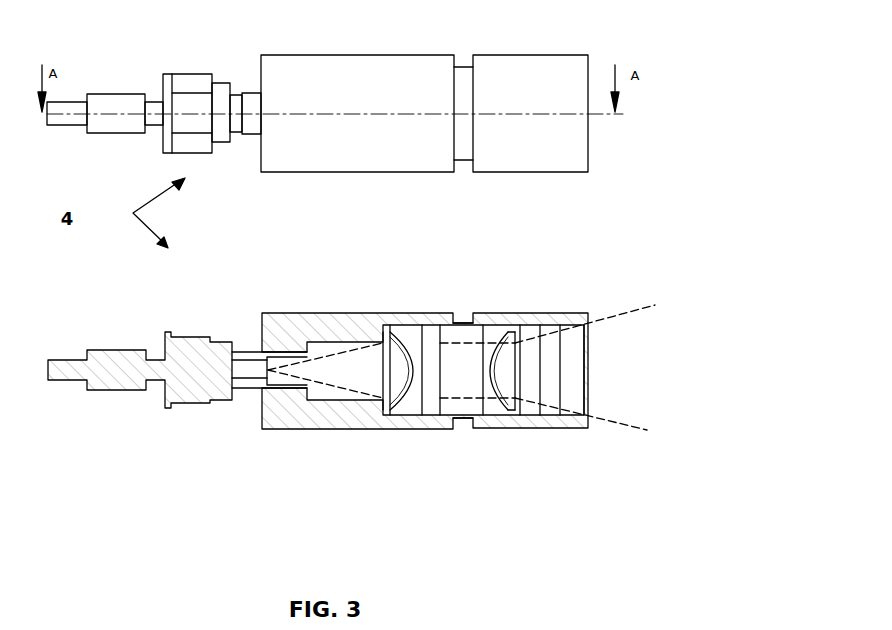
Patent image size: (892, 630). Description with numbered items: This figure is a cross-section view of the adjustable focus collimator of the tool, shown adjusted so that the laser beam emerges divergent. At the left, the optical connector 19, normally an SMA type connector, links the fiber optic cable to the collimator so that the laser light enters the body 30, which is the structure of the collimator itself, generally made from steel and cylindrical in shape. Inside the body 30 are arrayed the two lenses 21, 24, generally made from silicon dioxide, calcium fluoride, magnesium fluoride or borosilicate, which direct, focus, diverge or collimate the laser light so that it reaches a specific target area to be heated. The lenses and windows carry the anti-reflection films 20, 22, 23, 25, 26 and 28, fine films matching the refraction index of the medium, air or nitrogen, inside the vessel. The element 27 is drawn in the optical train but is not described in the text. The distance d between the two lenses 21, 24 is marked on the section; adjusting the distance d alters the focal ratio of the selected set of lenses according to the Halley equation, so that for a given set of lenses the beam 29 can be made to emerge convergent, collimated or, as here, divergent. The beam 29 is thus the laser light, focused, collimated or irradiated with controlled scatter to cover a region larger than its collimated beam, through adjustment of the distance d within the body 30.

The optical connector 19 is at (183, 362).
The anti-reflection film 20 is at (352, 313).
The lens 21 is at (398, 330).
The anti-reflection film 22 is at (425, 327).
The anti-reflection film 23 is at (483, 410).
The lens 24 is at (500, 410).
The anti-reflection film 25 is at (522, 412).
The anti-reflection film 26 is at (561, 340).
The end cap 27 is at (575, 360).
The anti-reflection film 28 is at (575, 333).
The beam 29 is at (600, 420).
The body 30 is at (358, 398).
The distance d is at (463, 57).